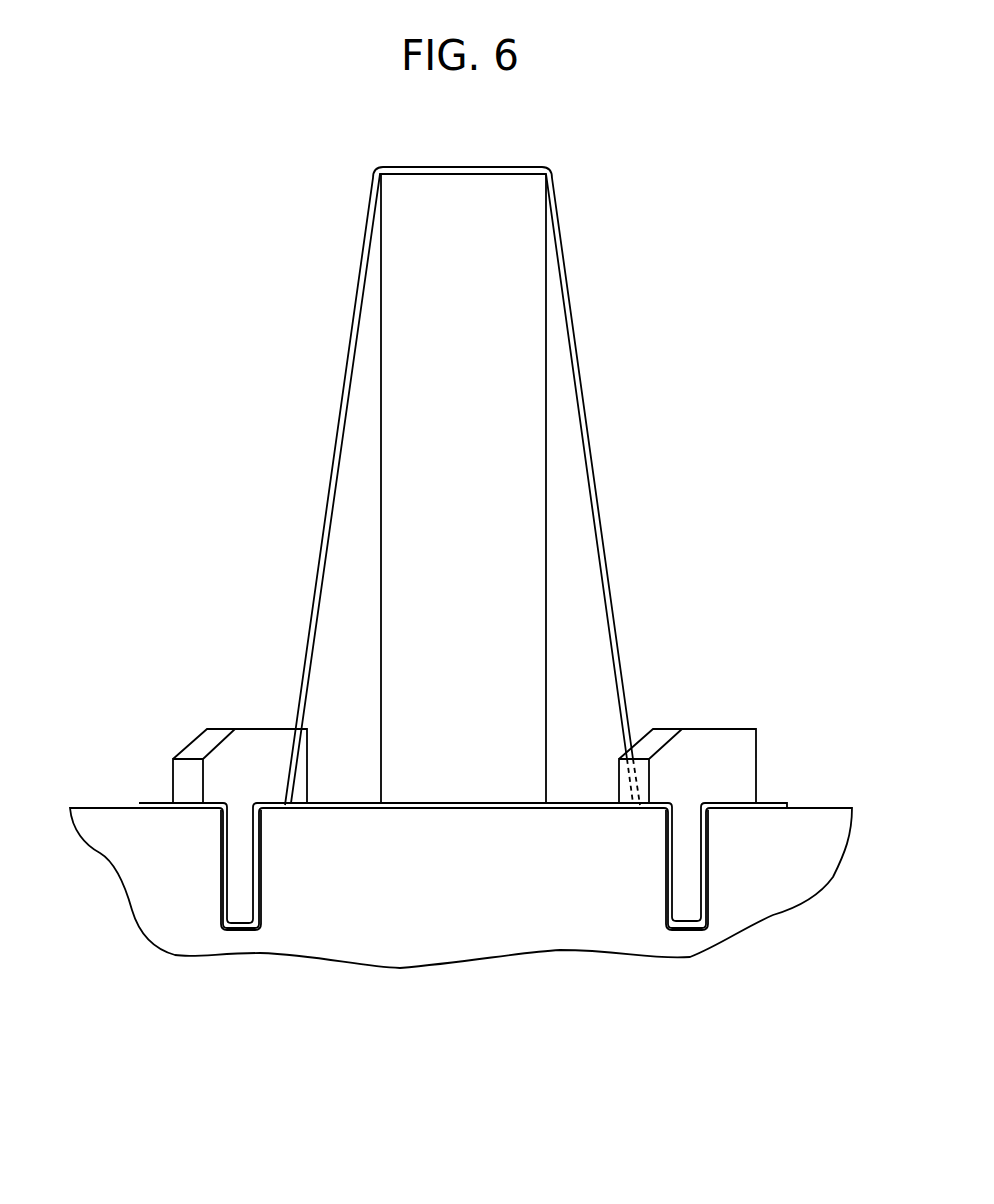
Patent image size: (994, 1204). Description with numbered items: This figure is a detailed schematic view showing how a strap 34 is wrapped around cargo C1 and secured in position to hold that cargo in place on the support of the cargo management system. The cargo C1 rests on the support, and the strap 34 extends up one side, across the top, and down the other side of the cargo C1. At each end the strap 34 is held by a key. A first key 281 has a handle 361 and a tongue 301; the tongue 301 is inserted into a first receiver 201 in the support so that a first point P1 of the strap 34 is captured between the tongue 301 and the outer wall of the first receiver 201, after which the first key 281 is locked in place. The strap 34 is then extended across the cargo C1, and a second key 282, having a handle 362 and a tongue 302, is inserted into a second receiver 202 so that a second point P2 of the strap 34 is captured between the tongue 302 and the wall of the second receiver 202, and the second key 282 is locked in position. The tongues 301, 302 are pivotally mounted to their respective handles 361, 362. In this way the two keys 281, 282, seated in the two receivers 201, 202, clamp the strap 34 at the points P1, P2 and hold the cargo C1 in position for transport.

The strap 34 is at (328, 482).
The cargo C1 is at (418, 335).
The handle of first key 361 is at (247, 730).
The handle of second key 362 is at (707, 728).
The first key 281 is at (184, 713).
The second key 282 is at (753, 727).
The tongue of first key 301 is at (235, 870).
The tongue of second key 302 is at (688, 870).
The first receiver 201 is at (199, 924).
The second receiver 202 is at (756, 924).
The first point of strap P1 is at (242, 930).
The second point of strap P2 is at (691, 930).